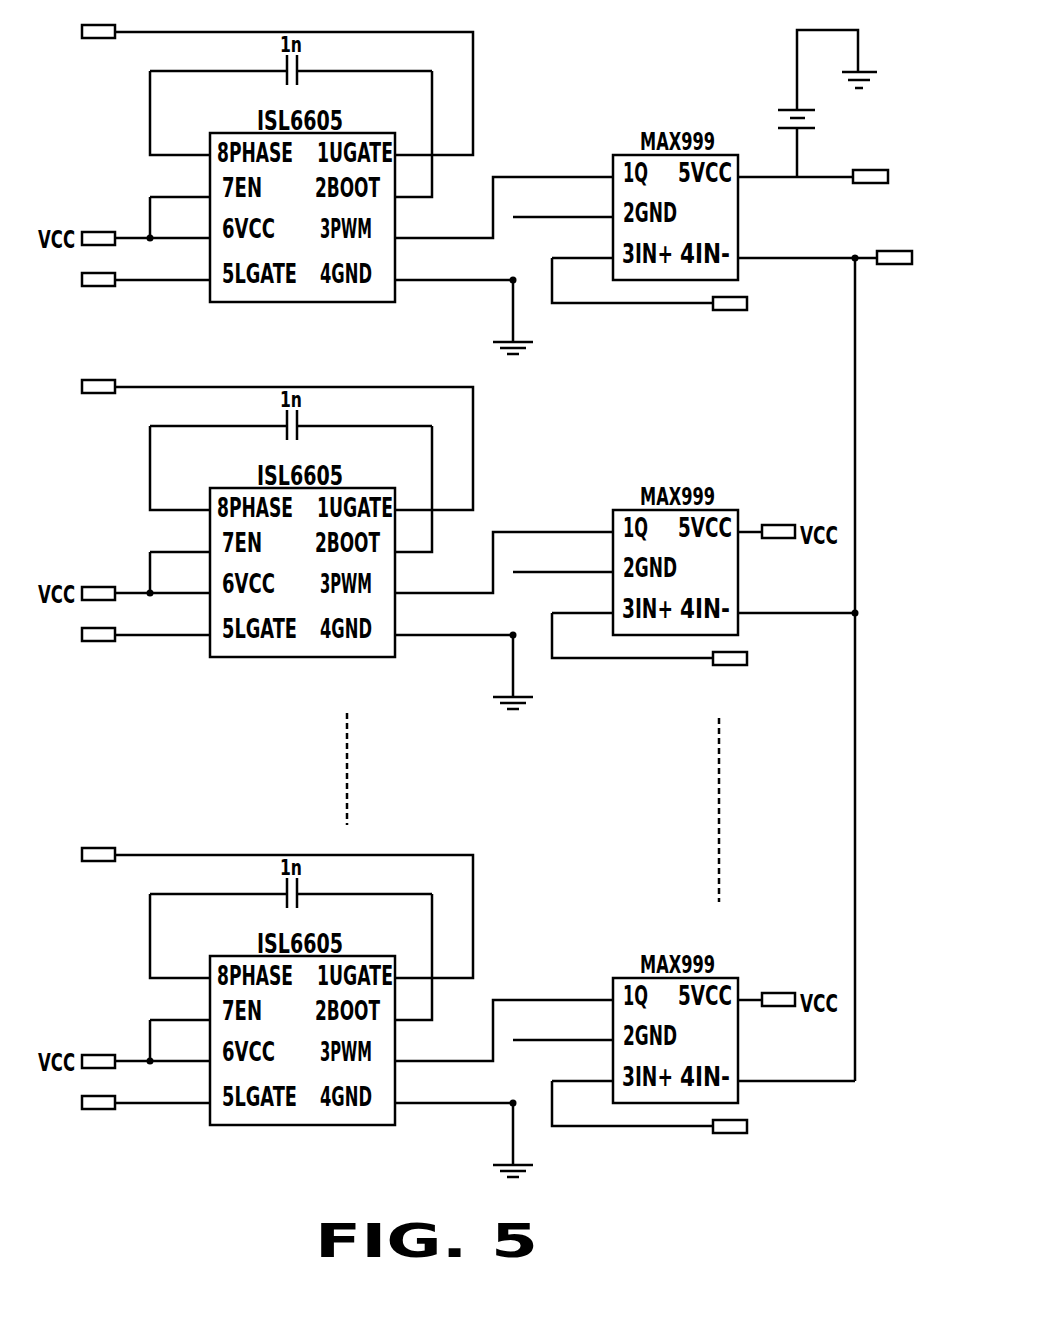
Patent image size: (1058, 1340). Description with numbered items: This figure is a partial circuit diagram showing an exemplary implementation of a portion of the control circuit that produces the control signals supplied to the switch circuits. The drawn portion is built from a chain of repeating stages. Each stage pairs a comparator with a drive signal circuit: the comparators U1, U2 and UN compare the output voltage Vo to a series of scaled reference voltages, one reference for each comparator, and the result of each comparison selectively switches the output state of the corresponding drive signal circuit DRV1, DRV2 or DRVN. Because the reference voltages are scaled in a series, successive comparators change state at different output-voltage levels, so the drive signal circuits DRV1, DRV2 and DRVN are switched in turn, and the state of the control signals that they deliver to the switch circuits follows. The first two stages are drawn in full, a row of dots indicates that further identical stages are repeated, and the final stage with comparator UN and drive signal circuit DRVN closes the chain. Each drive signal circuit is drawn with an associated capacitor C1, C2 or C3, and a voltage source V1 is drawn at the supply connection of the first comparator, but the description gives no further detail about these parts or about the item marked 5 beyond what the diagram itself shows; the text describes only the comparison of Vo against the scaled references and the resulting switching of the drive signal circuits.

The voltage source V1 5 is at (827, 103).
The voltage source V1 is at (827, 103).
The comparator U1 is at (746, 590).
The comparator U2 is at (705, 563).
The comparator UN is at (703, 1031).
The bootstrap capacitor C1 is at (291, 71).
The bootstrap capacitor C2 is at (291, 426).
The bootstrap capacitor C3 is at (291, 894).
The drive signal circuit DRV1 is at (325, 186).
The drive signal circuit DRV2 is at (325, 541).
The drive signal circuit DRVN is at (314, 1009).